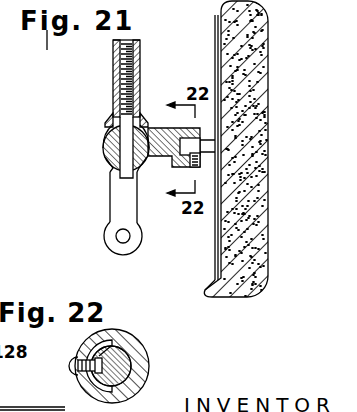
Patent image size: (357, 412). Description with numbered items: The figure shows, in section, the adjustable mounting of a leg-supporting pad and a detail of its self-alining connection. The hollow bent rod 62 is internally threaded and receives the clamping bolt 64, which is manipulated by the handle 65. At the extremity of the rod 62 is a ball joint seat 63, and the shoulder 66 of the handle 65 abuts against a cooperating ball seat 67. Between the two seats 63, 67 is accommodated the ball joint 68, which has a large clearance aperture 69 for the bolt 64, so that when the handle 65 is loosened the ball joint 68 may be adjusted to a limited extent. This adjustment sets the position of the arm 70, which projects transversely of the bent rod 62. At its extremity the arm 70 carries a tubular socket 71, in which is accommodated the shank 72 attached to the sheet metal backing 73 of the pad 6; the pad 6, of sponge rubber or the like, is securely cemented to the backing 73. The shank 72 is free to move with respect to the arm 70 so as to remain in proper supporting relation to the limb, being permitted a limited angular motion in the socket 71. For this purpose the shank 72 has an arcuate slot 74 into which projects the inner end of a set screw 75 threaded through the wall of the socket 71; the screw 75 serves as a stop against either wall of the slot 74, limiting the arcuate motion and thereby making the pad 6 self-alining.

In FIG. 21, the pad 6 is at (270, 67).
In FIG. 21, the bent rod 62 is at (139, 43).
In FIG. 21, the ball joint seat 63 is at (108, 122).
In FIG. 21, the clamping bolt 64 is at (132, 73).
In FIG. 21, the handle 65 is at (108, 246).
In FIG. 21, the shoulder 66 is at (118, 182).
In FIG. 21, the cooperating ball seat 67 is at (110, 167).
In FIG. 21, the ball joint 68 is at (106, 150).
In FIG. 21, the clearance aperture 69 is at (106, 140).
In FIG. 21, the arm 70 is at (190, 167).
In FIG. 22, the arm 70 is at (146, 352).
In FIG. 21, the tubular socket 71 is at (188, 129).
In FIG. 22, the tubular socket 71 is at (115, 356).
In FIG. 21, the shank 72 is at (222, 140).
In FIG. 22, the shank 72 is at (125, 374).
In FIG. 21, the sheet metal backing 73 is at (216, 245).
In FIG. 22, the arcuate slot 74 is at (97, 374).
In FIG. 21, the set screw 75 is at (188, 170).
In FIG. 22, the set screw 75 is at (70, 355).